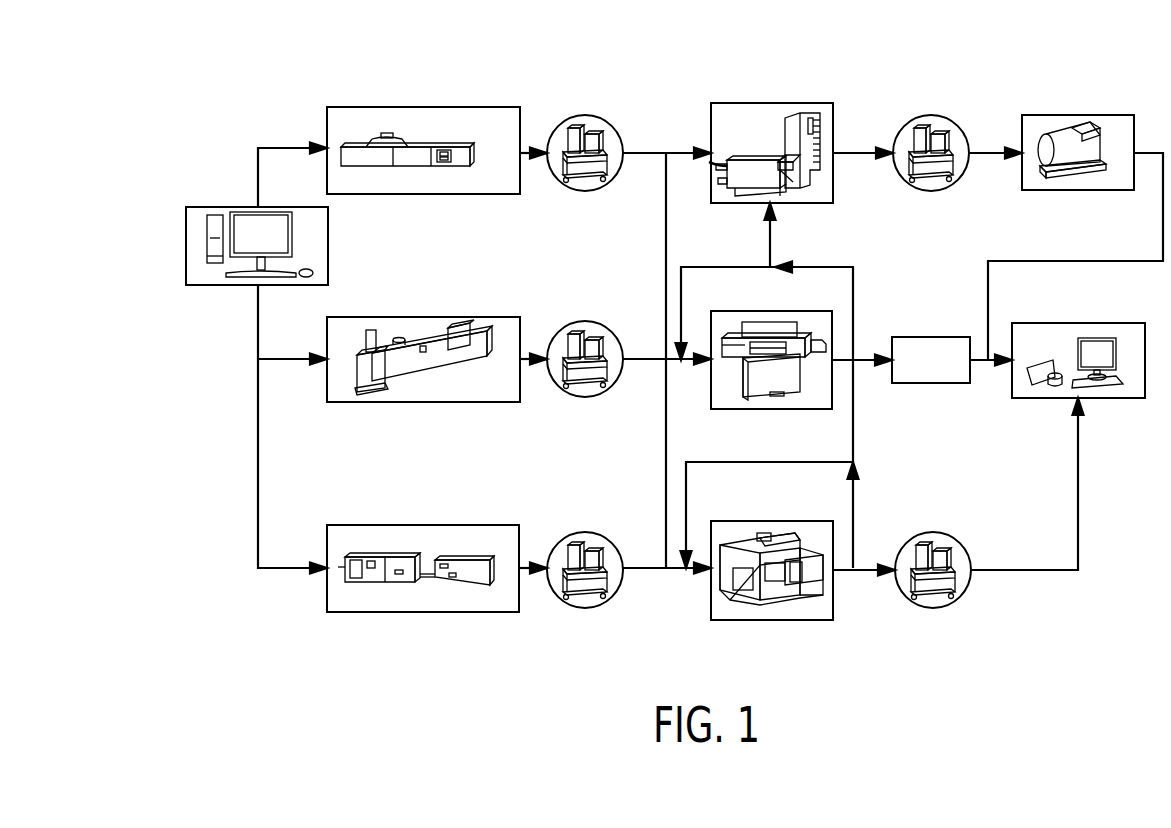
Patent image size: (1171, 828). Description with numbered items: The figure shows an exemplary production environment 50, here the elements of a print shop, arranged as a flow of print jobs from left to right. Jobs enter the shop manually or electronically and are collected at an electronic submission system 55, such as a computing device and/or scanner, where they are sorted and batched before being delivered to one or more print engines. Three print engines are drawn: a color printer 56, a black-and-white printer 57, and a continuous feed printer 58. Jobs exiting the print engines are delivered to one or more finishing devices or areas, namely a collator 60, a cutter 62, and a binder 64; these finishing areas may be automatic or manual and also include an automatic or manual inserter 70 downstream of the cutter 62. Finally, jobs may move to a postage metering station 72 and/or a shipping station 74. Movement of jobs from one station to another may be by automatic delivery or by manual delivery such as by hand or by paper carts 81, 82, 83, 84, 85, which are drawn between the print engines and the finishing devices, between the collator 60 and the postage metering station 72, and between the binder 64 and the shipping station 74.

The production environment 50 is at (674, 360).
The electronic submission system 55 is at (220, 285).
The color printer 56 is at (428, 195).
The black-and-white printer 57 is at (428, 403).
The continuous feed printer 58 is at (425, 612).
The collator 60 is at (782, 204).
The cutter 62 is at (778, 410).
The binder 64 is at (773, 622).
The inserter 70 is at (930, 384).
The postage metering station 72 is at (1079, 191).
The shipping station 74 is at (1103, 398).
The paper cart 81 is at (585, 191).
The paper cart 82 is at (585, 397).
The paper cart 83 is at (585, 608).
The paper cart 84 is at (930, 191).
The paper cart 85 is at (933, 608).